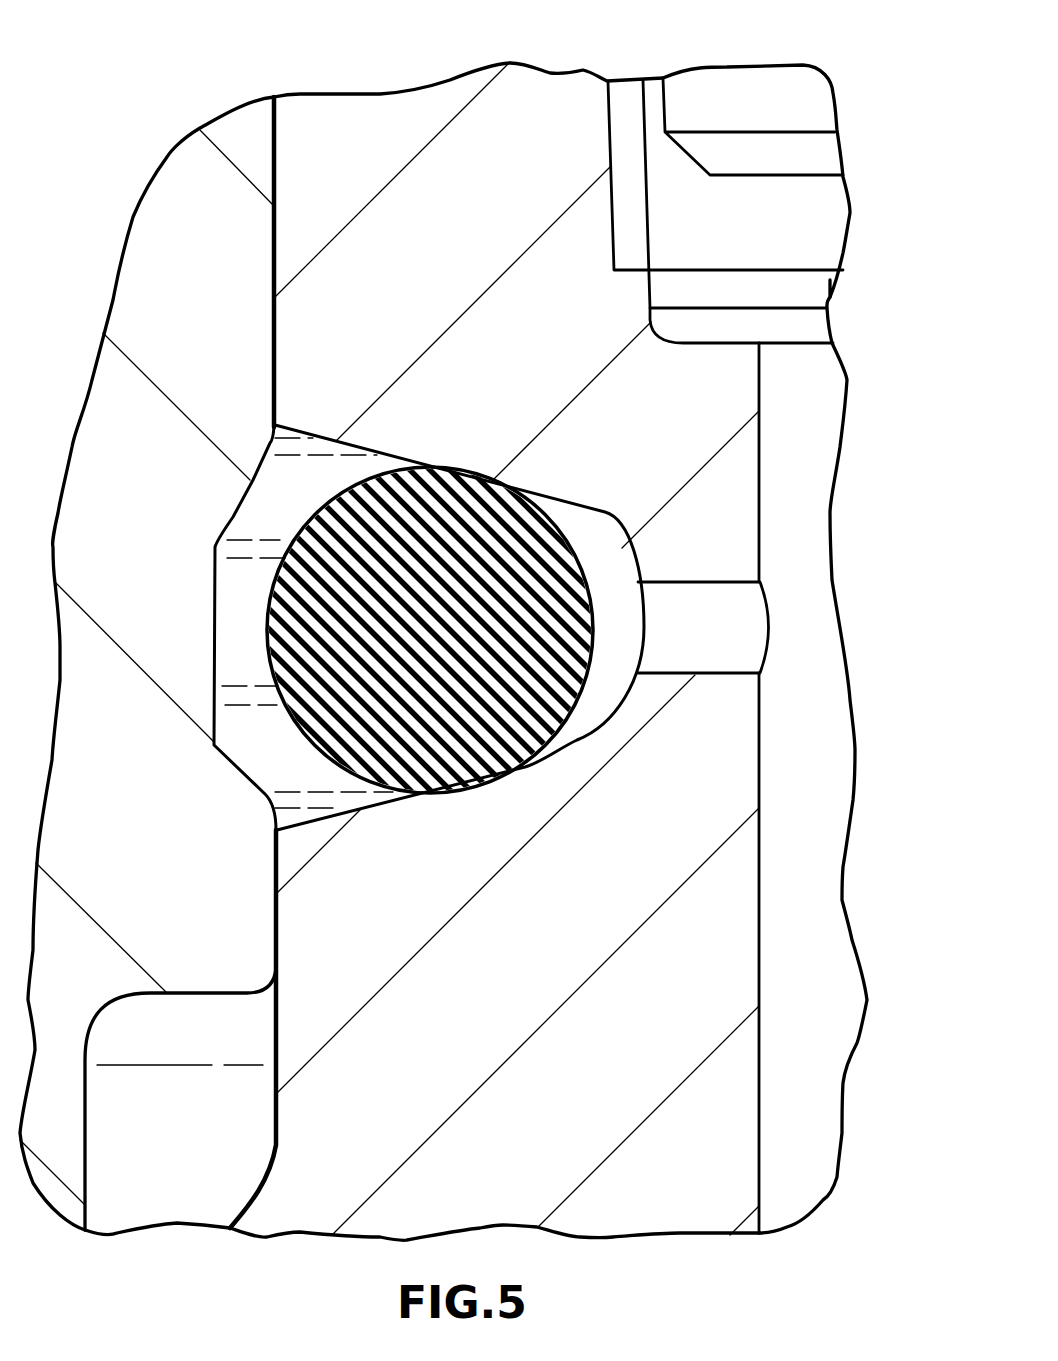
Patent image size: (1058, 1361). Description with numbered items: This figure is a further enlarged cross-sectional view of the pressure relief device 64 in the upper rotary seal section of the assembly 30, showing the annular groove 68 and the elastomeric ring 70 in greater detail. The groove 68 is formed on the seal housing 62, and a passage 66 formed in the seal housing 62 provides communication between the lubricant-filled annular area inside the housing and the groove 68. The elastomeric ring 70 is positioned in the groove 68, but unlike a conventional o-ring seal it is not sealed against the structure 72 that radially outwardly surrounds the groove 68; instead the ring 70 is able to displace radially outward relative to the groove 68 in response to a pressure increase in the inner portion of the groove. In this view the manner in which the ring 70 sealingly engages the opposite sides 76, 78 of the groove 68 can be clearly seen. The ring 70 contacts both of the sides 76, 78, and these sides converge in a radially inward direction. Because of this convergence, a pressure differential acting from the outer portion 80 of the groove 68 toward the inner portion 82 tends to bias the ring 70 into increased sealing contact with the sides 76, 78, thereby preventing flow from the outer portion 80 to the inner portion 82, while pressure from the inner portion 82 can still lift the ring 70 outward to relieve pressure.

The seal assembly 30 is at (835, 54).
The seal housing 62 is at (583, 72).
The pressure relief device 64 is at (535, 913).
The passage 66 is at (817, 805).
The annular groove 68 is at (620, 708).
The elastomeric ring 70 is at (353, 478).
The structure 72 is at (168, 157).
The side 76 is at (480, 768).
The side 78 is at (500, 508).
The outer portion 80 is at (308, 778).
The inner portion 82 is at (600, 547).